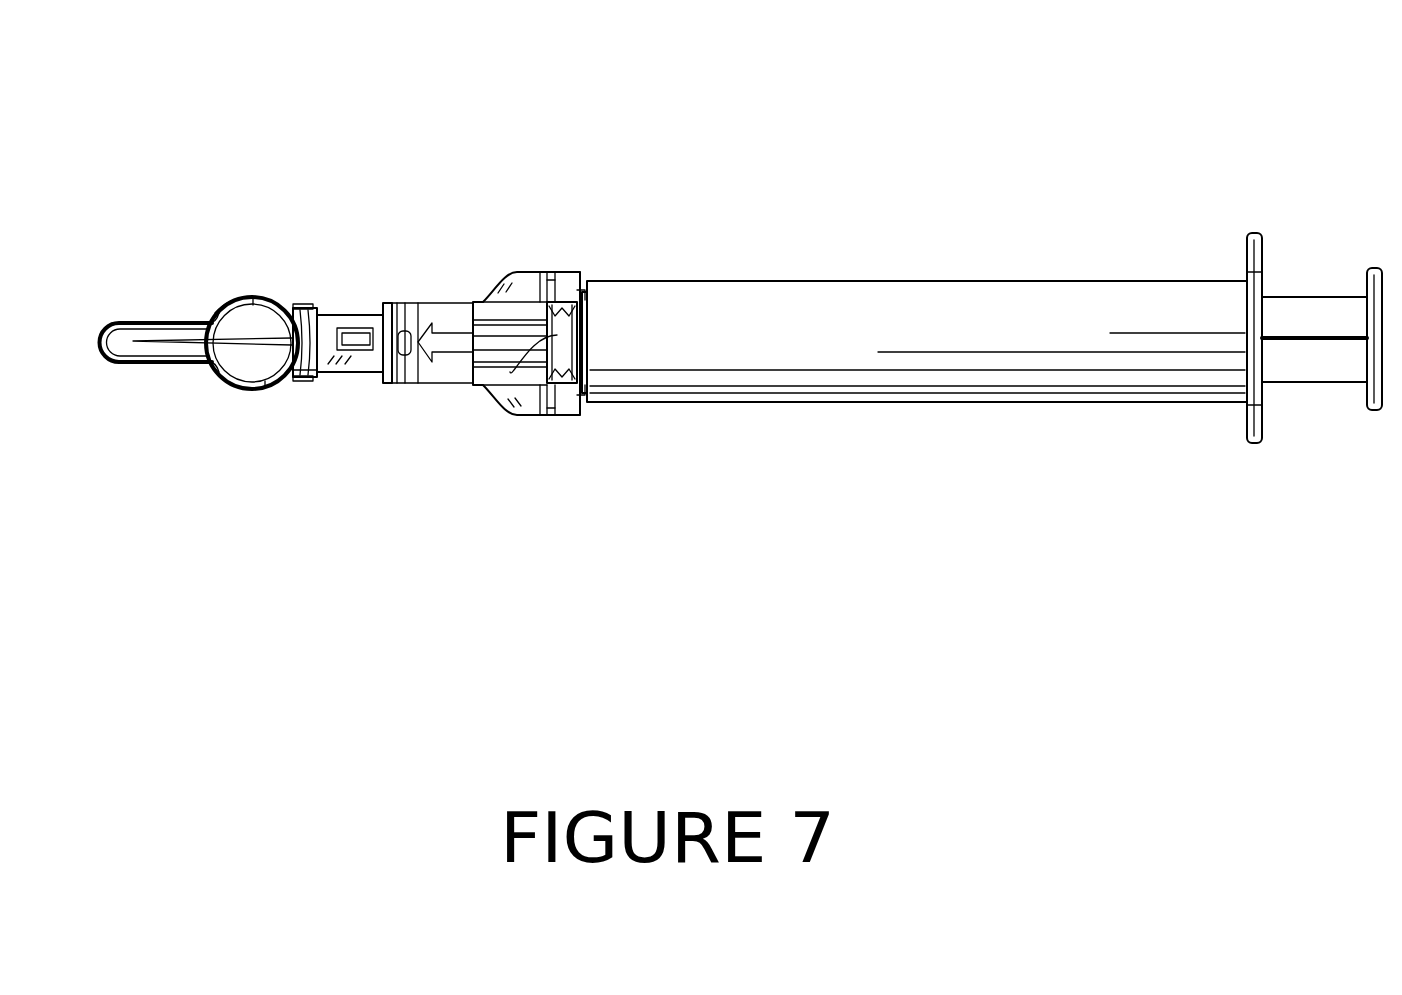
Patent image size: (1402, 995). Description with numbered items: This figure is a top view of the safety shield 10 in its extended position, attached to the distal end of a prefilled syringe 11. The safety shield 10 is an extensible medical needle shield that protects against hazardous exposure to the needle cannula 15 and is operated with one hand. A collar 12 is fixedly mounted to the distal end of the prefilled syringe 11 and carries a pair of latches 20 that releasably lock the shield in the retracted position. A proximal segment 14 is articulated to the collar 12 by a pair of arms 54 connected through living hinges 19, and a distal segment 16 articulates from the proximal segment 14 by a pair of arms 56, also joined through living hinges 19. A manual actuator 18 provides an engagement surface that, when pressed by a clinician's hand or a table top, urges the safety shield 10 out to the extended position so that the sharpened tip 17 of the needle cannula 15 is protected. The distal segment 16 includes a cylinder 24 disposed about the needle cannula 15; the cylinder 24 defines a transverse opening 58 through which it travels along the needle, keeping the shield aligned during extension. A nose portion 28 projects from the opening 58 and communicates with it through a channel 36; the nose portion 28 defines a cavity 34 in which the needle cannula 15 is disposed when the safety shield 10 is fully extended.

The safety shield 10 is at (273, 258).
The prefilled syringe 11 is at (929, 280).
The collar 12 is at (510, 372).
The proximal segment 14 is at (443, 302).
The needle cannula 15 is at (248, 338).
The distal segment 16 is at (183, 367).
The sharpened tip 17 is at (157, 323).
The manual actuator 18 is at (398, 302).
The living hinges 19 is at (543, 270).
The latches 20 is at (578, 280).
The cylinder 24 is at (277, 383).
The nose portion 28 is at (99, 343).
The cavity 34 is at (141, 323).
The channel 36 is at (141, 347).
The arms 54 is at (513, 273).
The arms 56 is at (382, 310).
The opening 58 is at (258, 297).